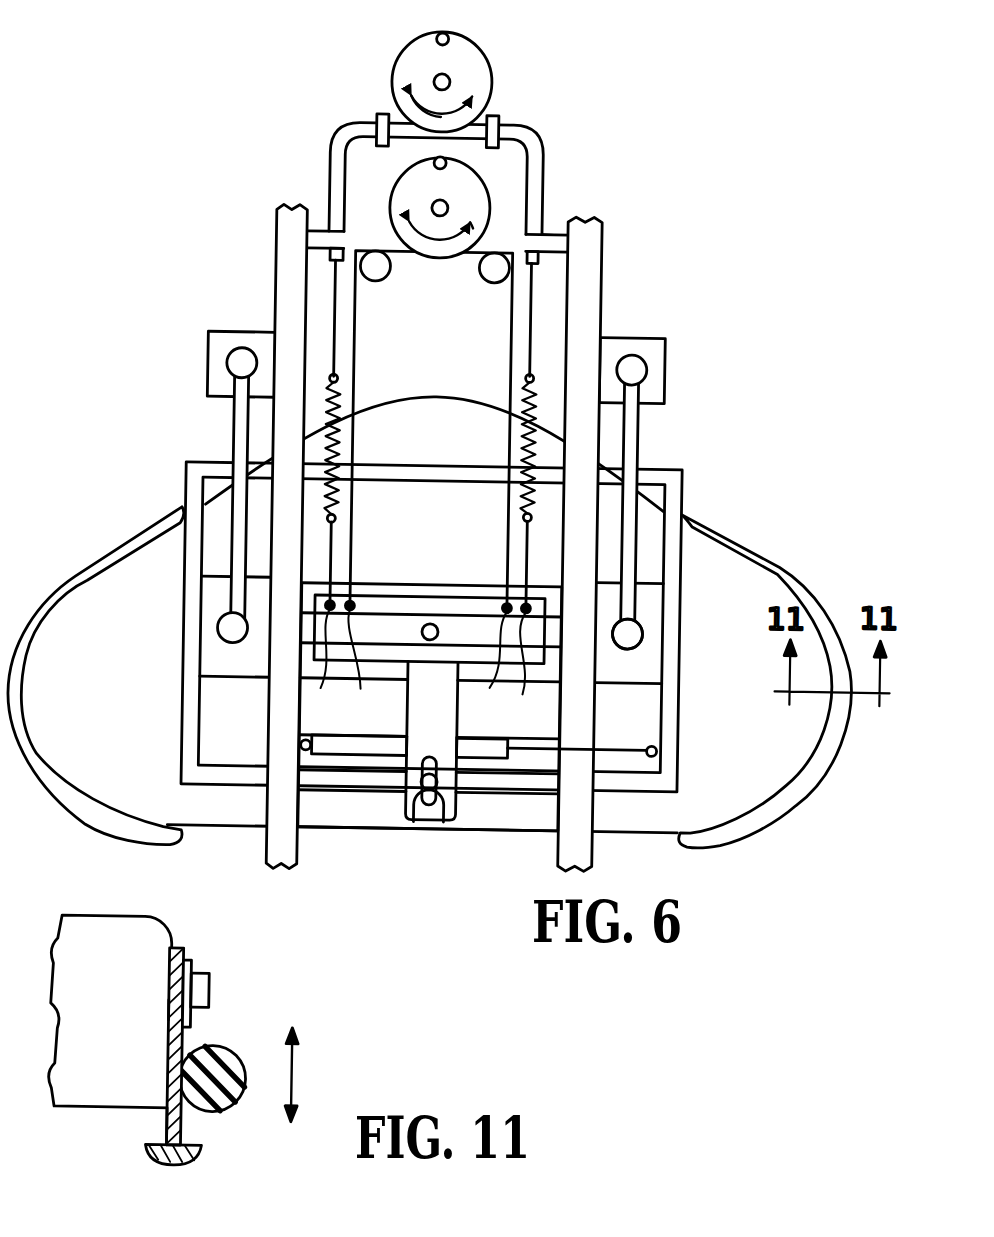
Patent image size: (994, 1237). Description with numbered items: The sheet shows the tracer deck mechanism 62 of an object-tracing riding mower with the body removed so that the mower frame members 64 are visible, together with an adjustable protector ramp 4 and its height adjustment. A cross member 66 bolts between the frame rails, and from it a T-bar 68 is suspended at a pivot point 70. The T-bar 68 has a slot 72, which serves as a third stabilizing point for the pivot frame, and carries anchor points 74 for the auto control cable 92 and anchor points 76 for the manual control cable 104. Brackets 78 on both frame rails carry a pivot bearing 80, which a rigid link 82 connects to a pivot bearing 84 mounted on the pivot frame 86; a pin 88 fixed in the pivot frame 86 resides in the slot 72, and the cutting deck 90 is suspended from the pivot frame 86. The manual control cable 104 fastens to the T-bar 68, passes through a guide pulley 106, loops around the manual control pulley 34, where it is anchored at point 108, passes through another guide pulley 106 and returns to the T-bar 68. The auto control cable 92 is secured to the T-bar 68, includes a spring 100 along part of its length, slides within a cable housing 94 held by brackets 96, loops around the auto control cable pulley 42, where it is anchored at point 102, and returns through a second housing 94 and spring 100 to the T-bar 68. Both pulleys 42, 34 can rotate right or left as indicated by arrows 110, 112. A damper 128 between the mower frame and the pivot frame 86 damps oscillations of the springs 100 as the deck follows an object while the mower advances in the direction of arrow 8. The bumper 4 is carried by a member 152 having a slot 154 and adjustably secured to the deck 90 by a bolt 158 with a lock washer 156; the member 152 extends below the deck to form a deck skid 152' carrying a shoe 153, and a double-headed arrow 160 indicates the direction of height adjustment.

In FIG. 6, the protector ramp 4 is at (114, 540).
In FIG. 11, the protector ramp 4 is at (240, 1098).
In FIG. 6, the arrow 8 is at (645, 633).
In FIG. 6, the manual control pulley 34 is at (392, 196).
In FIG. 6, the auto control cable pulley 42 is at (484, 61).
In FIG. 6, the tracer deck mechanism 62 is at (157, 289).
In FIG. 6, the mower frame members 64 is at (270, 254).
In FIG. 6, the cross member 66 is at (383, 632).
In FIG. 6, the T-bar 68 is at (425, 742).
In FIG. 6, the pivot point 70 is at (431, 623).
In FIG. 6, the slot 72 is at (426, 820).
In FIG. 6, the anchor points 74 is at (428, 674).
In FIG. 6, the anchor points 76 is at (427, 671).
In FIG. 6, the brackets 78 is at (206, 338).
In FIG. 6, the pivot bearing 80 is at (224, 366).
In FIG. 6, the rigid link 82 is at (232, 443).
In FIG. 6, the pivot bearing 84 is at (219, 633).
In FIG. 6, the pivot frame 86 is at (683, 488).
In FIG. 6, the pin 88 is at (440, 805).
In FIG. 6, the cutting deck 90 is at (776, 745).
In FIG. 11, the cutting deck 90 is at (128, 996).
In FIG. 6, the auto control cable 92 is at (461, 142).
In FIG. 6, the cable housing 94 is at (344, 134).
In FIG. 6, the brackets 96 is at (376, 115).
In FIG. 6, the spring 100 is at (508, 393).
In FIG. 6, the anchor point 102 is at (439, 38).
In FIG. 6, the manual control cable 104 is at (488, 301).
In FIG. 6, the guide pulley 106 is at (478, 276).
In FIG. 6, the anchor point 108 is at (402, 173).
In FIG. 6, the arrow 110 is at (406, 90).
In FIG. 6, the arrow 112 is at (462, 231).
In FIG. 6, the damper 128 is at (318, 740).
In FIG. 11, the member 152 is at (225, 1031).
In FIG. 11, the deck skid 152' is at (107, 1136).
In FIG. 11, the shoe 153 is at (200, 1160).
In FIG. 11, the slot 154 is at (170, 1010).
In FIG. 11, the lock washer 156 is at (192, 966).
In FIG. 11, the bolt 158 is at (210, 992).
In FIG. 11, the direction arrow 160 is at (300, 1062).